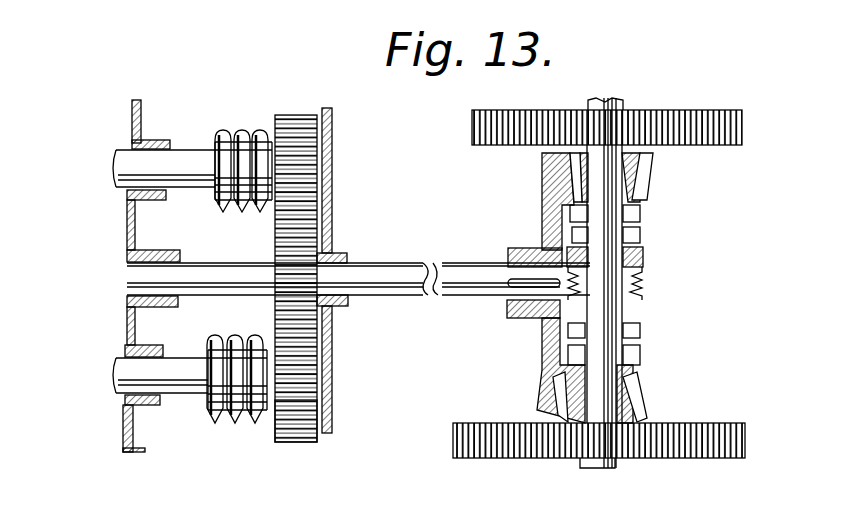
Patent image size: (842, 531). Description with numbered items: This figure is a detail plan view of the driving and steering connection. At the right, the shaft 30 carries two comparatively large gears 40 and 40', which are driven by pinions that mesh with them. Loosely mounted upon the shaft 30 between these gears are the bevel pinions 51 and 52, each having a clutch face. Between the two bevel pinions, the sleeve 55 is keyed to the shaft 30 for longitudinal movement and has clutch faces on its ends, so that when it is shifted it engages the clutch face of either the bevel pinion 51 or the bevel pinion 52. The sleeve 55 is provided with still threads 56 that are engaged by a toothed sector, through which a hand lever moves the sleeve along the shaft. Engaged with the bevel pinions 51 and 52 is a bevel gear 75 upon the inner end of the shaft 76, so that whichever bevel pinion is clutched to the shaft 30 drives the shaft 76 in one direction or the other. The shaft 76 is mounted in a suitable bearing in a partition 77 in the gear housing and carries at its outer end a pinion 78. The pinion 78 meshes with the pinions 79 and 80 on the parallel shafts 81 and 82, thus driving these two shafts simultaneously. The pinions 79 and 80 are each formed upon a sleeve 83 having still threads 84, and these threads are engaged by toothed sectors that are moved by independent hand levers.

The shaft 30 is at (625, 245).
The large gear 40 is at (605, 429).
The large gear 40' is at (632, 127).
The bevel pinion 51 is at (640, 182).
The bevel pinion 52 is at (640, 395).
The sleeve 55 is at (645, 310).
The still threads 56 is at (642, 290).
The bevel gear 75 is at (572, 190).
The shaft 76 is at (465, 300).
The partition 77 is at (333, 200).
The pinion 78 is at (305, 272).
The pinion 79 is at (296, 125).
The pinion 80 is at (294, 440).
The parallel shaft 81 is at (190, 178).
The parallel shaft 82 is at (186, 395).
The sleeve 83 is at (228, 130).
The still threads 84 is at (262, 130).